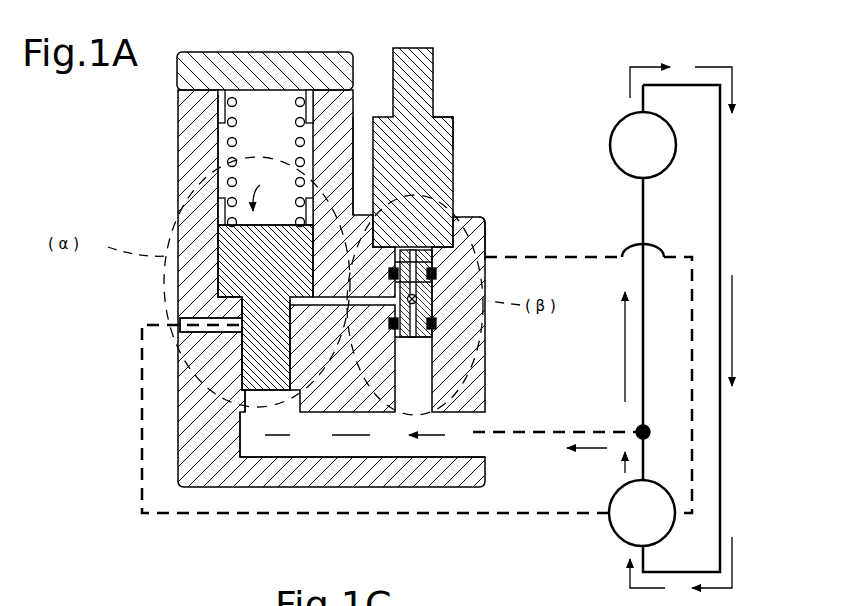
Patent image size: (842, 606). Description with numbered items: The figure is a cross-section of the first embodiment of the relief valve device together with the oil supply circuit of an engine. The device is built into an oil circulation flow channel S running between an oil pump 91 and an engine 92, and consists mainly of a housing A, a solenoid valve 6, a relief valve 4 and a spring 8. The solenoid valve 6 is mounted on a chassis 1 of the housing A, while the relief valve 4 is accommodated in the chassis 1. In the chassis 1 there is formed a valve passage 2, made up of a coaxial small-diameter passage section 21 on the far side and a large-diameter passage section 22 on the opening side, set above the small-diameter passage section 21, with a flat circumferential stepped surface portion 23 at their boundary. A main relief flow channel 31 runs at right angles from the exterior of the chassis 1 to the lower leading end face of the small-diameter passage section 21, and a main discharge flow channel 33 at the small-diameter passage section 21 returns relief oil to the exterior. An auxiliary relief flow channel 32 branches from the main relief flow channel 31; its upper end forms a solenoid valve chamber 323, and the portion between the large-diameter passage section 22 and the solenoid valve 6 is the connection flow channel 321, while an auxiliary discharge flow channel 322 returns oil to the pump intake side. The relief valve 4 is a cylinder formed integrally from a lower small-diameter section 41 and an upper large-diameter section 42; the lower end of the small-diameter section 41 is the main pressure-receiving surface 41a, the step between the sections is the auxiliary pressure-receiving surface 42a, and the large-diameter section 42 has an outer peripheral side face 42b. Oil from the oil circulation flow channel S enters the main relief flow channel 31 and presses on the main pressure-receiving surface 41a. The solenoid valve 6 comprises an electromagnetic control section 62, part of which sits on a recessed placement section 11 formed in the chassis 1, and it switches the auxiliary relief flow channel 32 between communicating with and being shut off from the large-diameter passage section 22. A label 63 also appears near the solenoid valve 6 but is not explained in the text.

In FIG. 1A, the chassis 1 is at (490, 364).
In FIG. 1A, the valve passage 2 is at (262, 143).
In FIG. 1A, the relief valve 4 is at (261, 195).
In FIG. 1A, the solenoid valve 6 is at (458, 150).
In FIG. 1C, the solenoid valve 6 is at (448, 600).
In FIG. 1A, the spring 8 is at (235, 101).
In FIG. 1A, the recessed placement section 11 is at (440, 238).
In FIG. 1A, the small-diameter passage section 21 is at (235, 365).
In FIG. 1A, the large-diameter passage section 22 is at (200, 280).
In FIG. 1A, the stepped surface portion 23 is at (225, 290).
In FIG. 1A, the main relief flow channel 31 is at (392, 441).
In FIG. 1A, the auxiliary relief flow channel 32 is at (414, 373).
In FIG. 1A, the main discharge flow channel 33 is at (205, 330).
In FIG. 1A, the small-diameter section 41 is at (241, 423).
In FIG. 1A, the main pressure-receiving surface 41a is at (243, 437).
In FIG. 1A, the large-diameter section 42 is at (245, 270).
In FIG. 1A, the auxiliary pressure-receiving surface 42a is at (290, 308).
In FIG. 1A, the outer peripheral side face 42b is at (232, 258).
In FIG. 1A, the electromagnetic control section 62 is at (455, 132).
In FIG. 1C, the plug portion 63 is at (502, 600).
In FIG. 1A, the oil pump 91 is at (626, 533).
In FIG. 1A, the engine 92 is at (612, 138).
In FIG. 1A, the connection flow channel 321 is at (357, 213).
In FIG. 1A, the auxiliary discharge flow channel 322 is at (445, 262).
In FIG. 1A, the solenoid valve chamber 323 is at (466, 330).
In FIG. 1A, the housing A is at (489, 226).
In FIG. 1A, the oil circulation flow channel S is at (640, 222).